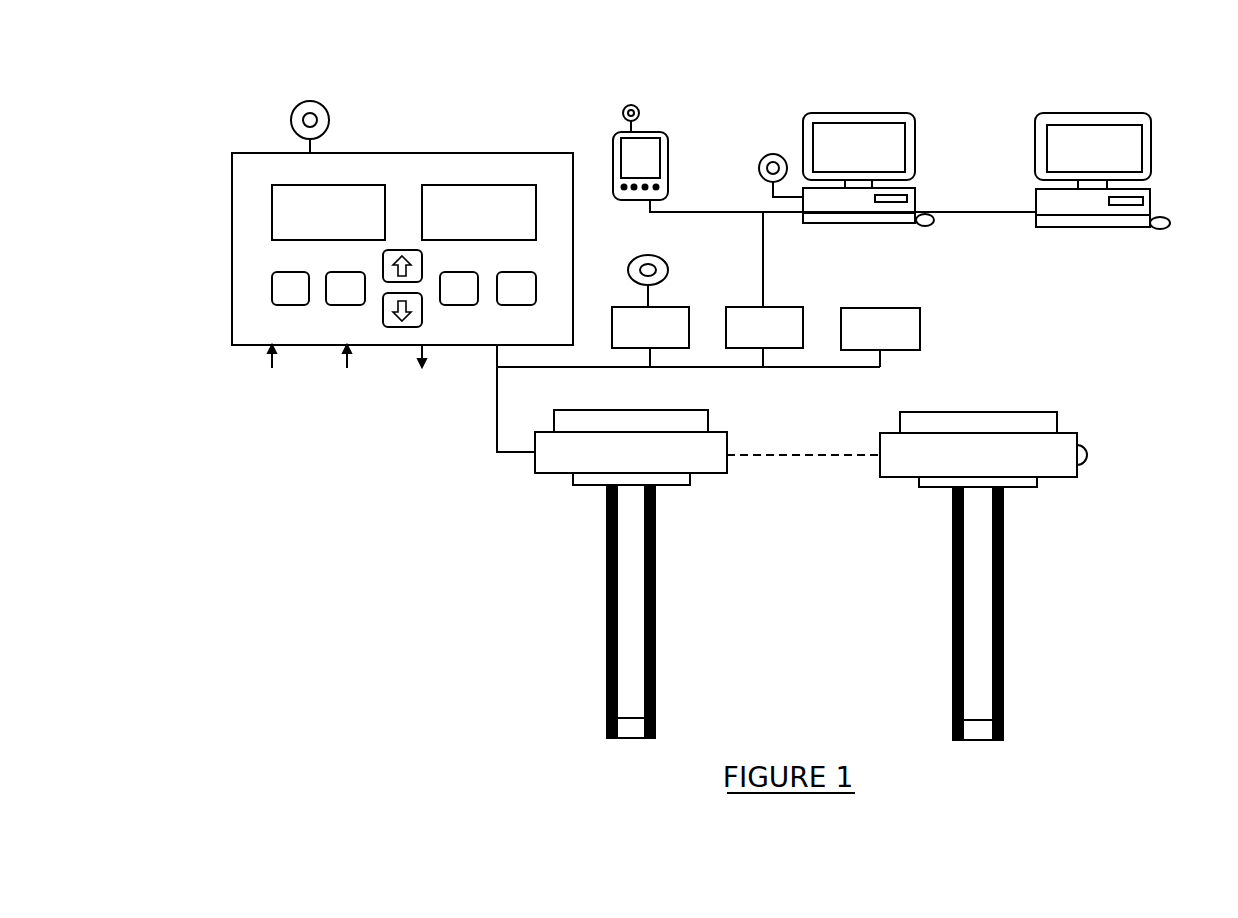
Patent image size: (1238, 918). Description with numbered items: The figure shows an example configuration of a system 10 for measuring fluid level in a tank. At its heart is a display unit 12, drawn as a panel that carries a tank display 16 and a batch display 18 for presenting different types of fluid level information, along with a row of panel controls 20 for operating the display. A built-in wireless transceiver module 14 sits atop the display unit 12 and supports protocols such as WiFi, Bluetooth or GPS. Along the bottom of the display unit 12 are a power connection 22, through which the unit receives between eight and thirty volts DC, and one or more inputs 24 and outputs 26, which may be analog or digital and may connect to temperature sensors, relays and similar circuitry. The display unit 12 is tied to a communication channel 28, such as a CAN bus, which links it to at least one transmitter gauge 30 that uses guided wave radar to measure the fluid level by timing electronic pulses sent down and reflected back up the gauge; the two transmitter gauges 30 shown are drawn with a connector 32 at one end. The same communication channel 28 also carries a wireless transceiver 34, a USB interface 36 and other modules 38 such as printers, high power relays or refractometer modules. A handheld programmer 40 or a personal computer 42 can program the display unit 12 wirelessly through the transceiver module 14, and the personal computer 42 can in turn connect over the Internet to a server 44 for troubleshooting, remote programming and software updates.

The system 10 is at (443, 38).
The display unit 12 is at (458, 152).
The wireless transceiver module 14 is at (314, 100).
The tank display 16 is at (272, 212).
The batch display 18 is at (538, 220).
The panel controls 20 is at (255, 295).
The power connection 22 is at (265, 363).
The inputs 24 is at (355, 357).
The outputs 26 is at (437, 362).
The communication channel 28 is at (490, 430).
The transmitter gauge 30 is at (568, 478).
The connector 32 is at (1095, 462).
The wireless transceiver 34 is at (672, 300).
The USB interface 36 is at (780, 300).
The other modules 38 is at (928, 322).
The handheld programmer 40 is at (675, 132).
The personal computer 42 is at (922, 118).
The server 44 is at (1158, 112).